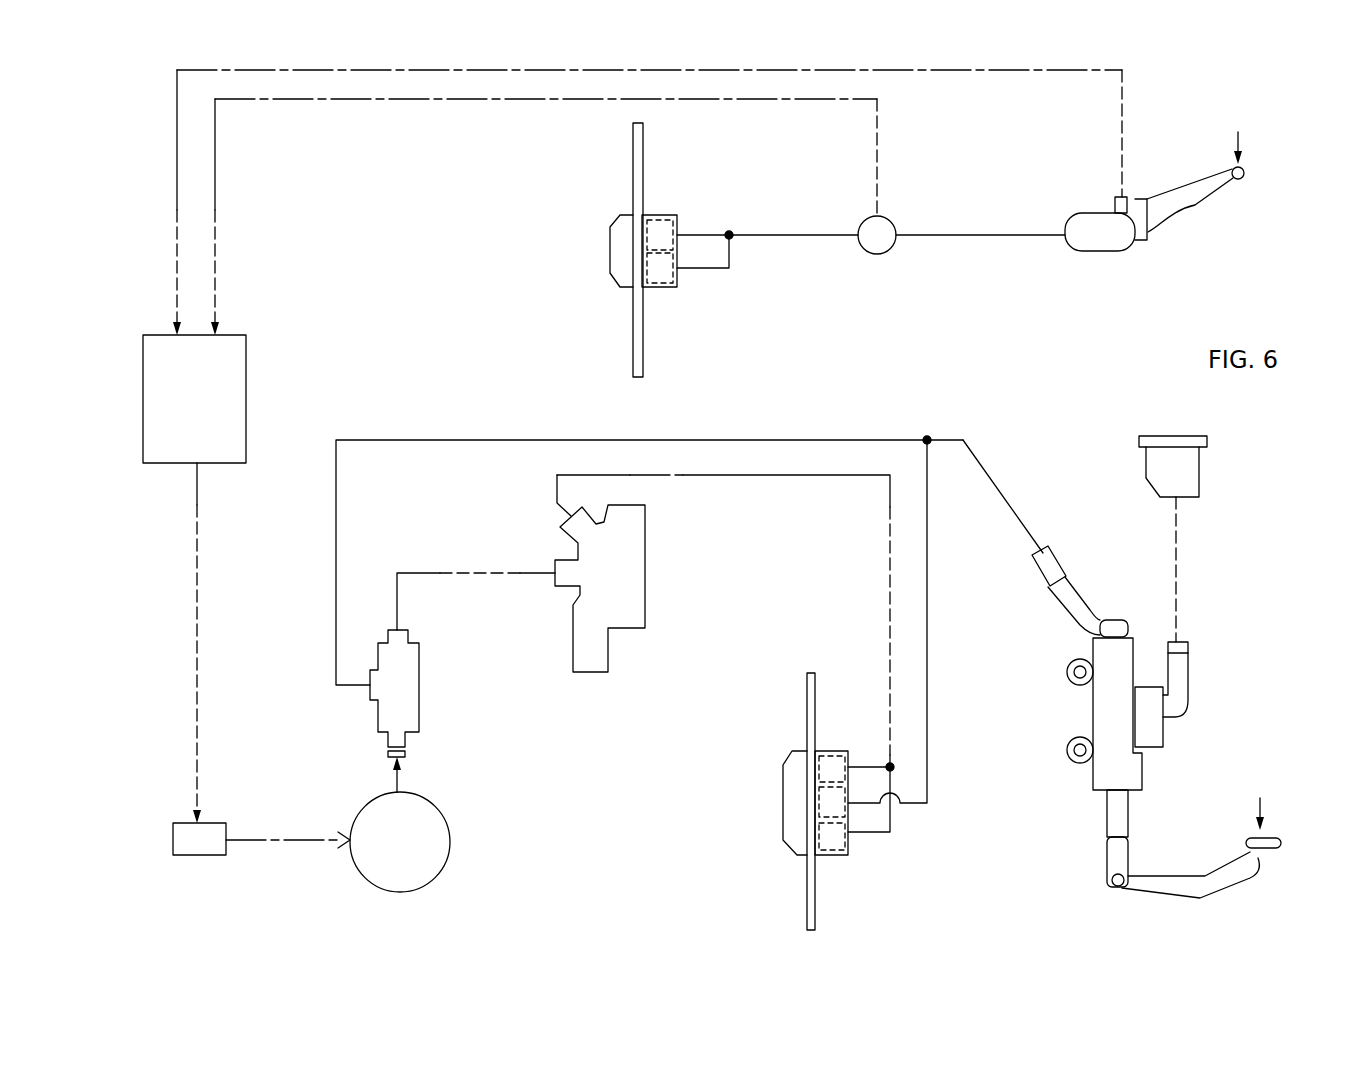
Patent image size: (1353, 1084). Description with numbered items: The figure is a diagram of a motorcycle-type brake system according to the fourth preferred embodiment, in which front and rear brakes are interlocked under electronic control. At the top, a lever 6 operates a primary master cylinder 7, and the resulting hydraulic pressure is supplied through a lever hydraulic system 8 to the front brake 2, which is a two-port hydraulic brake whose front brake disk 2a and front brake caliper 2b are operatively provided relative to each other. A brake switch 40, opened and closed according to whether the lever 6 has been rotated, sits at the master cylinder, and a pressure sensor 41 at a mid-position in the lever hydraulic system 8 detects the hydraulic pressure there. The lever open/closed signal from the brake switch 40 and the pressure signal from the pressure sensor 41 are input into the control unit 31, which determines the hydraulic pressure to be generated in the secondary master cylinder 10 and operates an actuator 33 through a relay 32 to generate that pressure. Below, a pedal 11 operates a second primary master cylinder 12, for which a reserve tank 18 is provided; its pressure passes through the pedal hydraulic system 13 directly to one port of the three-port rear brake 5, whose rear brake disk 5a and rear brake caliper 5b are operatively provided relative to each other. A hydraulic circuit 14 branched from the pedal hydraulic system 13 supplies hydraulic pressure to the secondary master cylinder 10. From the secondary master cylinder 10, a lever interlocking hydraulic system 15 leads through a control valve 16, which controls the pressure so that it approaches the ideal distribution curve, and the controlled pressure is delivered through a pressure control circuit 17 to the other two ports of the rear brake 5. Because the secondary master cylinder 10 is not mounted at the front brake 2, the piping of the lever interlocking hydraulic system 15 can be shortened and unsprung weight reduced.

The front brake 2 is at (606, 196).
The front brake disk 2a is at (643, 160).
The front brake caliper 2b is at (662, 212).
The pressure sensor 41 is at (880, 254).
The lever hydraulic system 8 is at (985, 235).
The brake switch 40 is at (1114, 199).
The primary master cylinder 7 is at (1100, 251).
The lever 6 is at (1193, 205).
The control unit 31 is at (246, 356).
The hydraulic circuit 14 is at (463, 440).
The lever interlocking hydraulic system 15 is at (440, 573).
The control valve 16 is at (647, 573).
The pressure control circuit 17 is at (790, 475).
The secondary master cylinder 10 is at (420, 697).
The relay 32 is at (205, 855).
The actuator 33 is at (438, 872).
The rear brake 5 is at (766, 866).
The rear brake disk 5a is at (805, 702).
The rear brake caliper 5b is at (783, 795).
The pedal hydraulic system 13 is at (1005, 502).
The reserve tank 18 is at (1185, 497).
The primary master cylinder 12 is at (1093, 704).
The pedal 11 is at (1247, 840).